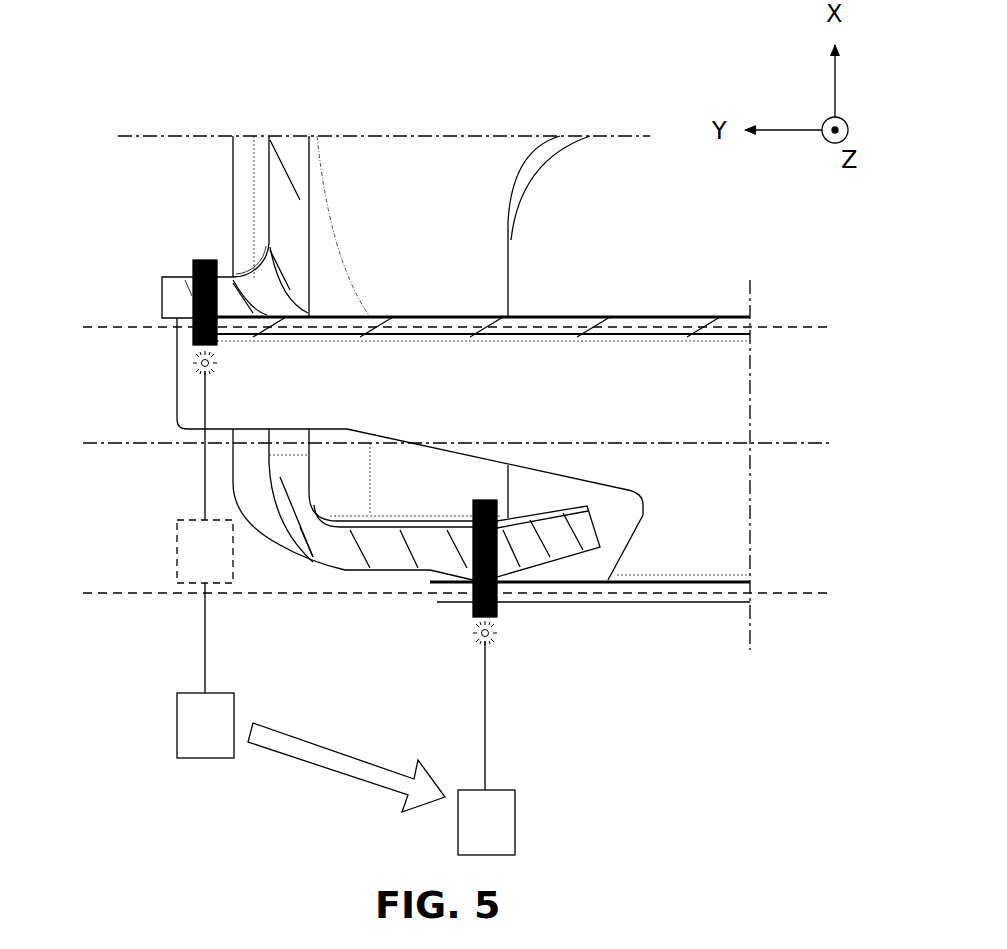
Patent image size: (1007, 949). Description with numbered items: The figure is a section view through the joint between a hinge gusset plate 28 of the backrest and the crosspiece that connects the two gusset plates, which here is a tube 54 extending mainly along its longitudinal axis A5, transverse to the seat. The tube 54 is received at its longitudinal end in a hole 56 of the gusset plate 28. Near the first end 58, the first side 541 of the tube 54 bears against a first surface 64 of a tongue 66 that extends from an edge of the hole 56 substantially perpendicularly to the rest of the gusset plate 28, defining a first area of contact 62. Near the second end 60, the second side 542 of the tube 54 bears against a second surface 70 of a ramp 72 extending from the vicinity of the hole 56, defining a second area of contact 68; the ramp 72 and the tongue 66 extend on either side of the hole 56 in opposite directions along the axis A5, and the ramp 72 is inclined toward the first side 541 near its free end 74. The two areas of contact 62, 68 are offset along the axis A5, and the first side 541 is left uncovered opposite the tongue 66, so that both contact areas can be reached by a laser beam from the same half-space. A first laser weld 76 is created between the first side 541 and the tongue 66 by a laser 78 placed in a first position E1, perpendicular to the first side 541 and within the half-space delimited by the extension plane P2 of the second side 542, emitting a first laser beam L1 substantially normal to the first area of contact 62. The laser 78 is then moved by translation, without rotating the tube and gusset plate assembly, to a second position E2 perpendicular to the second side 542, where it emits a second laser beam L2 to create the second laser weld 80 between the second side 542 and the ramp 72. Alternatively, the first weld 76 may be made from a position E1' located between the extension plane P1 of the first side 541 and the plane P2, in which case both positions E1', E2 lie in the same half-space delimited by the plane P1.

The hinge gusset plate 28 is at (233, 178).
The tube 54 is at (483, 462).
The first side of the tube 541 is at (630, 327).
The second side of the tube 542 is at (692, 592).
The hole 56 is at (297, 297).
The first end 58 is at (173, 333).
The second end 60 is at (430, 605).
The first area of contact 62 is at (173, 322).
The first surface 64 is at (225, 330).
The tongue 66 is at (175, 300).
The second area of contact 68 is at (440, 583).
The second surface 70 is at (530, 580).
The ramp 72 is at (580, 552).
The free end of the ramp 74 is at (608, 520).
The first laser weld 76 is at (203, 262).
The laser 78 is at (177, 535).
The second laser weld 80 is at (473, 605).
The first laser beam L1 is at (205, 462).
The second laser beam L2 is at (486, 730).
The extension plane of the first side P1 is at (812, 320).
The extension plane of the second side P2 is at (812, 585).
The longitudinal axis of the tube A5 is at (812, 438).
The first position of the laser E1 is at (205, 725).
The alternative first position of the laser E1' is at (205, 551).
The second position of the laser E2 is at (486, 822).